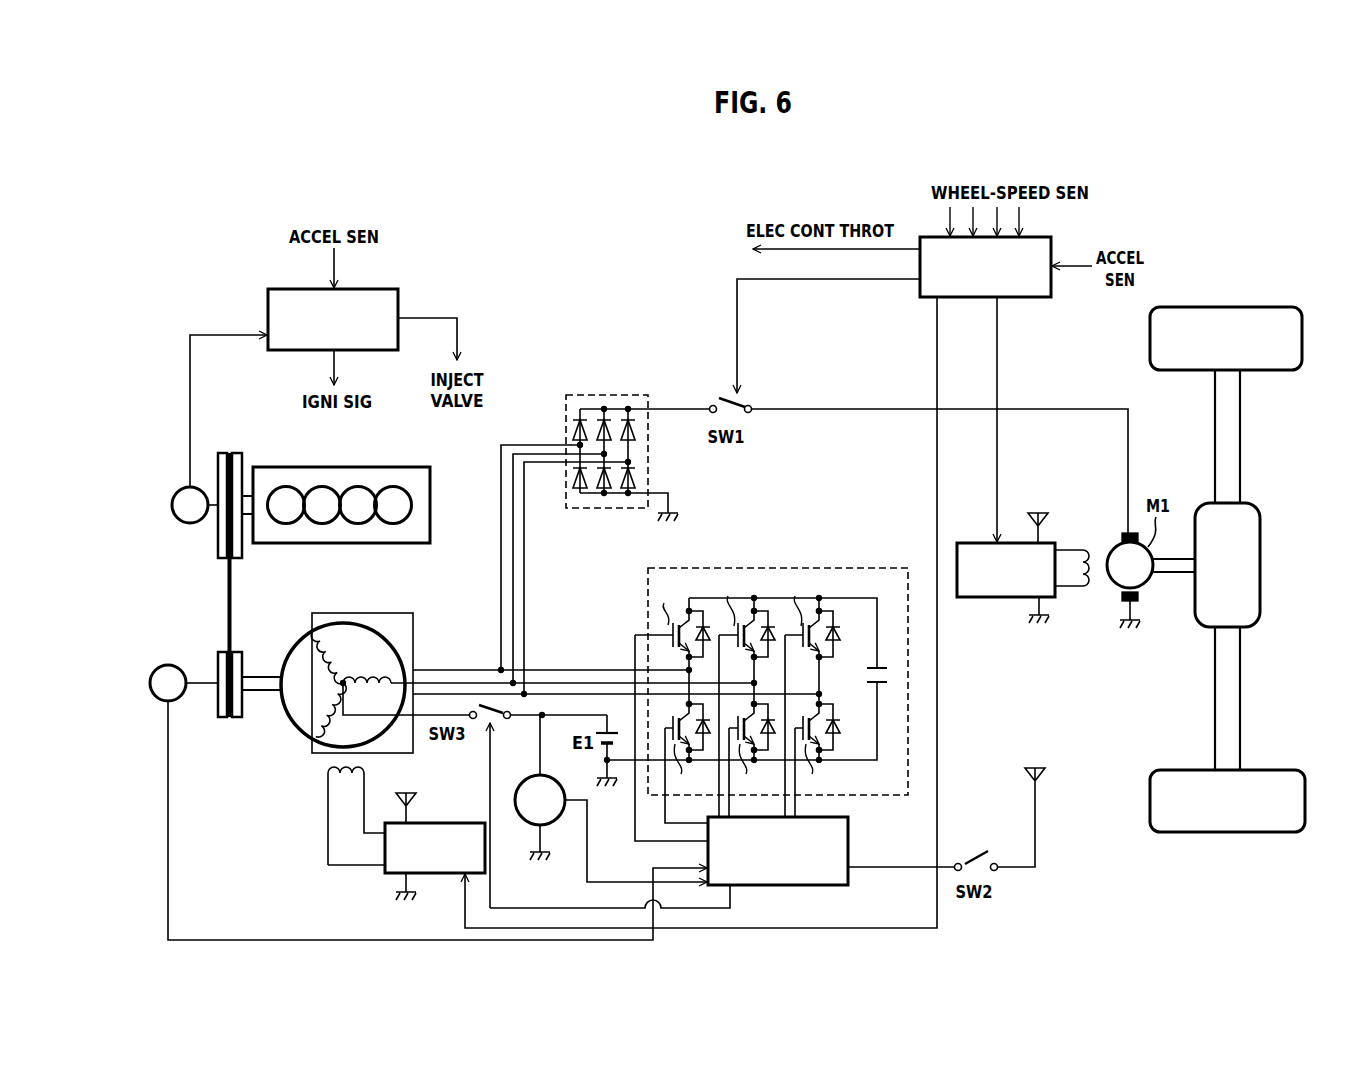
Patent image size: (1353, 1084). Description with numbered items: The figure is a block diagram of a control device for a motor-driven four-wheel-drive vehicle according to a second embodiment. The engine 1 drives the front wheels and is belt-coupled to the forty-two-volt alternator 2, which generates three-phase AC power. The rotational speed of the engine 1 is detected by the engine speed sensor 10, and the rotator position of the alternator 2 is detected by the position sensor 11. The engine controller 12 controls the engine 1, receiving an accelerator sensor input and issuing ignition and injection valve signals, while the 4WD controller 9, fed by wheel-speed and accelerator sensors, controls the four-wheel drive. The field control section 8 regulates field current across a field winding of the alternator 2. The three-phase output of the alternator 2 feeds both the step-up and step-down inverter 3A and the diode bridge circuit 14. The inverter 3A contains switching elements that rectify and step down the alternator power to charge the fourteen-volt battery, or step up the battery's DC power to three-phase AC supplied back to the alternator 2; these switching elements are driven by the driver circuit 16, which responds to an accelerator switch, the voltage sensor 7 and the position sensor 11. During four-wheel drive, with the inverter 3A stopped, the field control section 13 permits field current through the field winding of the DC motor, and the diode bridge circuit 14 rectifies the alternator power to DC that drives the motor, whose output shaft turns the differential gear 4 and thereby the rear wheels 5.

The engine 1 is at (403, 467).
The 42V alternator 2 is at (297, 636).
The step-up and step-down inverter 3A is at (875, 568).
The differential gear 4 is at (1260, 562).
The rear wheels 5 is at (1254, 307).
The voltage sensor 7 is at (531, 778).
The field control section 8 is at (436, 823).
The 4WD controller 9 is at (933, 237).
The engine speed sensor 10 is at (178, 487).
The position sensor 11 is at (166, 664).
The engine controller 12 is at (398, 299).
The field control section 13 is at (973, 543).
The diode bridge circuit 14 is at (628, 395).
The driver circuit 16 is at (848, 846).